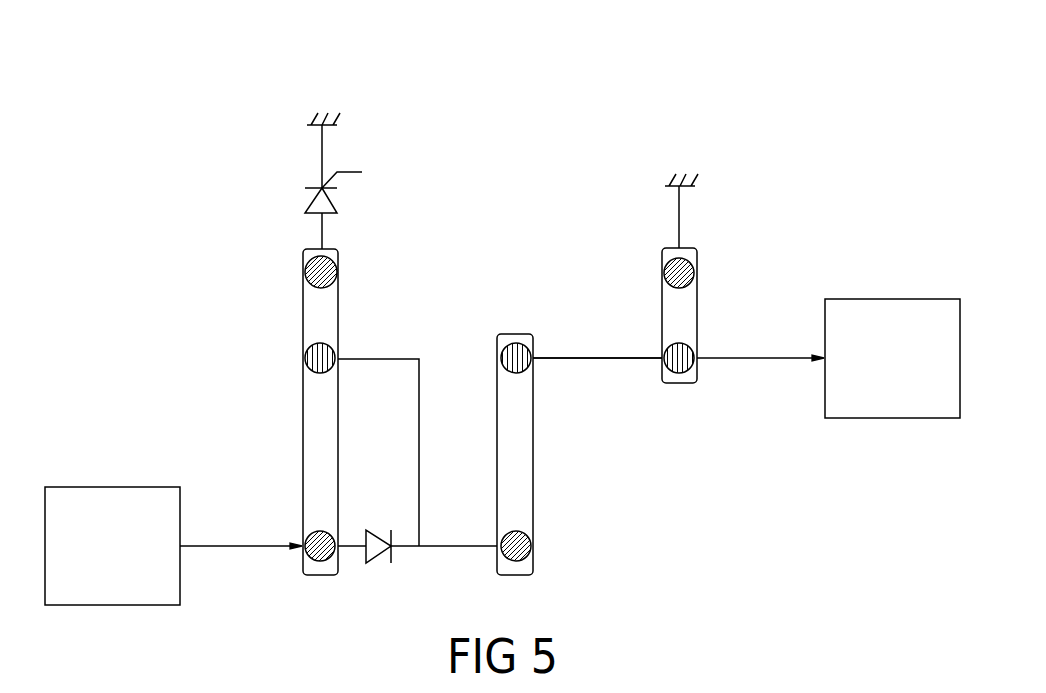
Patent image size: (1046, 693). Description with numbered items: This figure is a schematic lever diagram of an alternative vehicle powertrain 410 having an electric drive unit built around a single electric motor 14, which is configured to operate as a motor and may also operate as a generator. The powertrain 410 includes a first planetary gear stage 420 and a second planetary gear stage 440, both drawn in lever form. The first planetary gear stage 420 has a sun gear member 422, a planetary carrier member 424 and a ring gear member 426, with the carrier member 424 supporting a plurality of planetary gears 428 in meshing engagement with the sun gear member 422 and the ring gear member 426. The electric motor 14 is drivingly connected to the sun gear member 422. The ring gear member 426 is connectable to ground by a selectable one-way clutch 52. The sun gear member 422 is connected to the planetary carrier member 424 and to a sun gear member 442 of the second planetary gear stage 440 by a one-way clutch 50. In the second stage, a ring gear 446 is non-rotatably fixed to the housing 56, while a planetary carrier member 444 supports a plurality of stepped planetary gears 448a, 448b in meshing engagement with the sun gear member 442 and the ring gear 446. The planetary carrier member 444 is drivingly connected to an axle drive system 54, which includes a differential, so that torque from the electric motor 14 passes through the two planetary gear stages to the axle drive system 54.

The electric motor 14 is at (101, 558).
The axle drive system 54 is at (881, 369).
The powertrain 410 is at (632, 117).
The first planetary gear stage 420 is at (280, 100).
The sun gear member 422 is at (312, 560).
The planetary carrier member 424 is at (379, 359).
The ring gear member 426 is at (312, 262).
The planetary gears 428 is at (310, 372).
The second planetary gear stage 440 is at (747, 227).
The sun gear member 442 is at (523, 557).
The planetary carrier member 444 is at (607, 358).
The ring gear 446 is at (672, 262).
The stepped planetary gear 448a is at (523, 367).
The stepped planetary gear 448b is at (685, 372).
The one-way clutch 50 is at (377, 553).
The selectable one-way clutch 52 is at (314, 199).
The housing 56 is at (323, 118).